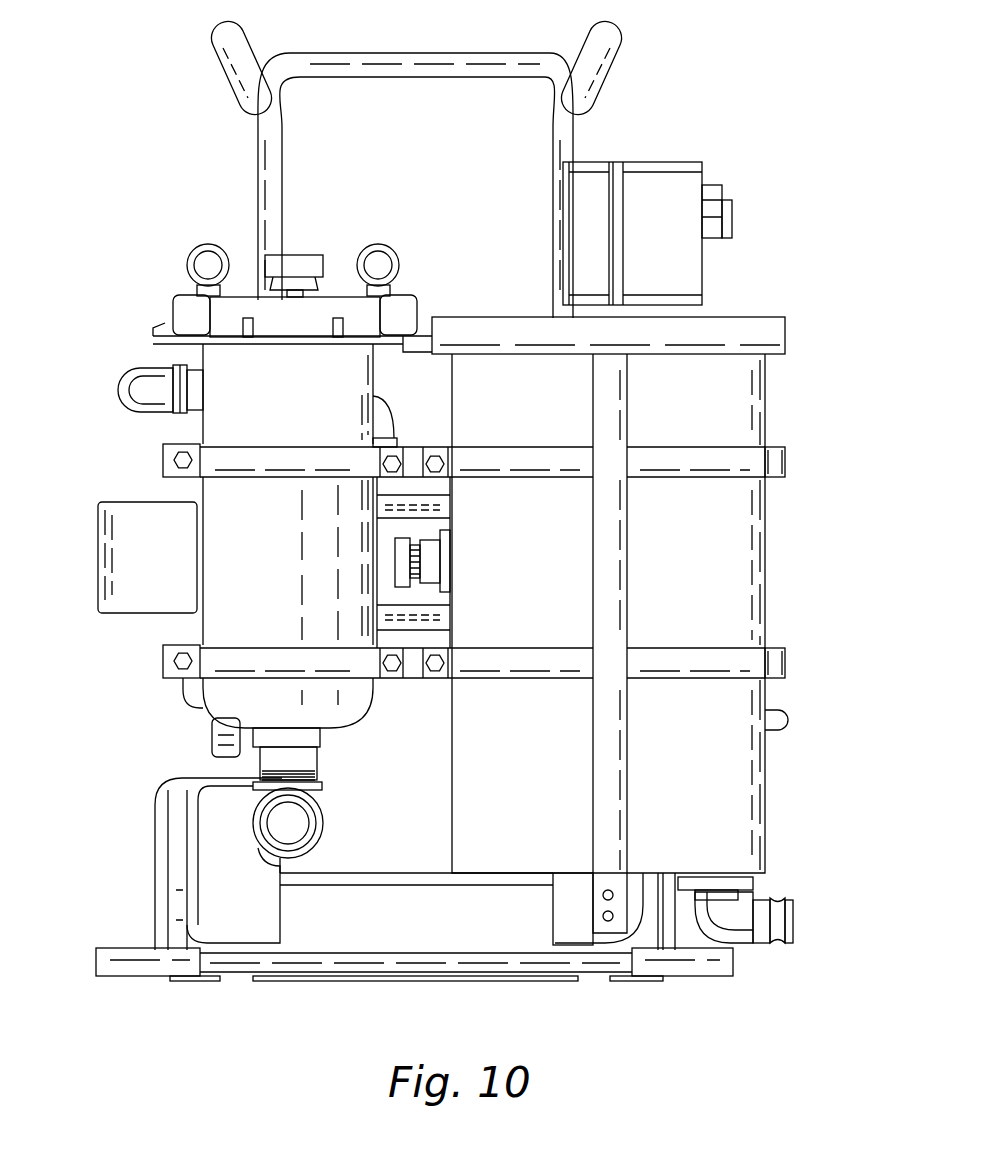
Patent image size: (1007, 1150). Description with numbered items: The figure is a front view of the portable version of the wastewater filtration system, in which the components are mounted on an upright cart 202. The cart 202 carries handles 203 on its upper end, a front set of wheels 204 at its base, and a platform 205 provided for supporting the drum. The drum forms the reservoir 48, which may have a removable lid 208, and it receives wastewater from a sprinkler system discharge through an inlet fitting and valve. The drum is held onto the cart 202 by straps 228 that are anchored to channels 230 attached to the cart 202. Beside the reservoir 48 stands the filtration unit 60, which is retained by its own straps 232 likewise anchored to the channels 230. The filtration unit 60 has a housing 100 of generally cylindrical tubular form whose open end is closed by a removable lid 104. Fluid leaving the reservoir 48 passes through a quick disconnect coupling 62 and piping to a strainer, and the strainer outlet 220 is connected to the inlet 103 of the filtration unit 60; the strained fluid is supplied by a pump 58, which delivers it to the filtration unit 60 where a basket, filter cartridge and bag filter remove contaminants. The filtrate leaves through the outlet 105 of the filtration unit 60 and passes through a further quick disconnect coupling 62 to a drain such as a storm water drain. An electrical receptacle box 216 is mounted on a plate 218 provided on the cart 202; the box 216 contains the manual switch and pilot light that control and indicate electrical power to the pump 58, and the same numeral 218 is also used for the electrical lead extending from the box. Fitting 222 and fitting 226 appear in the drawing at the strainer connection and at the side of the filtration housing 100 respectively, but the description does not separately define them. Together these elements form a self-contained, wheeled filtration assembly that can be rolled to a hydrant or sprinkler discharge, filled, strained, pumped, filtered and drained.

The reservoir 48 is at (765, 780).
The pump 58 is at (128, 502).
The filtration unit 60 is at (233, 480).
The quick disconnect coupling 62 is at (262, 845).
The housing 100 is at (242, 585).
The inlet 103 is at (197, 387).
The removable lid 104 is at (248, 297).
The outlet 105 is at (277, 733).
The upright cart 202 is at (431, 163).
The handles 203 is at (218, 48).
The front set of wheels 204 is at (153, 858).
The platform 205 is at (455, 982).
The removable lid 208 is at (755, 316).
The electrical receptacle box 216 is at (665, 162).
The plate 218 is at (735, 225).
The outlet 220 is at (432, 550).
The nipple 222 is at (400, 573).
The inlet fitting 226 is at (128, 368).
The straps 228 is at (722, 463).
The channels 230 is at (775, 446).
The straps 232 is at (235, 477).